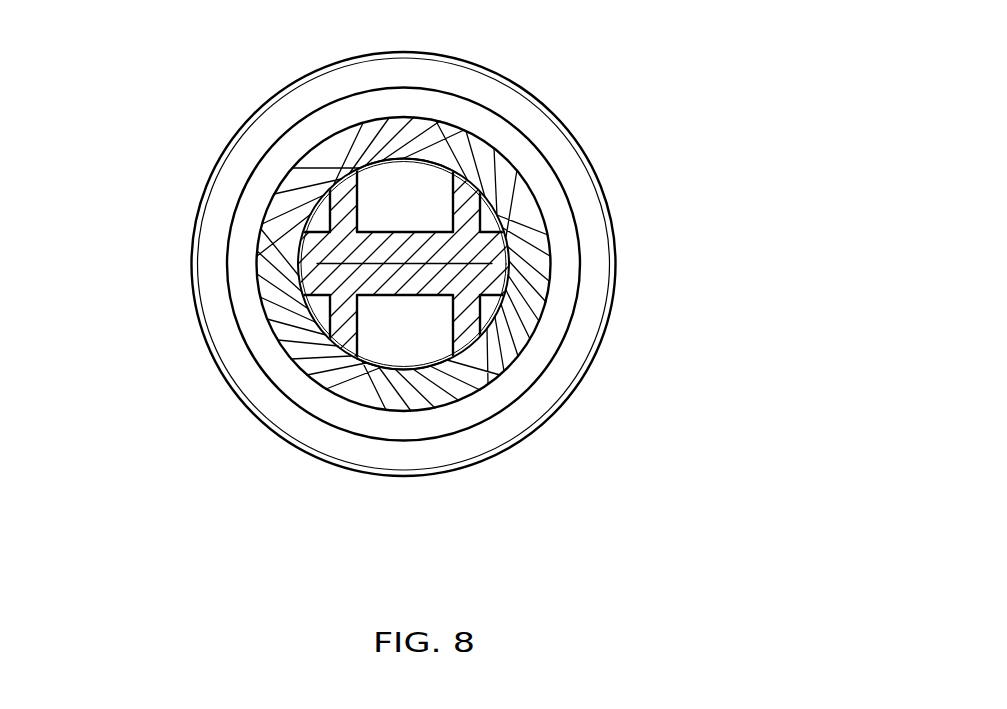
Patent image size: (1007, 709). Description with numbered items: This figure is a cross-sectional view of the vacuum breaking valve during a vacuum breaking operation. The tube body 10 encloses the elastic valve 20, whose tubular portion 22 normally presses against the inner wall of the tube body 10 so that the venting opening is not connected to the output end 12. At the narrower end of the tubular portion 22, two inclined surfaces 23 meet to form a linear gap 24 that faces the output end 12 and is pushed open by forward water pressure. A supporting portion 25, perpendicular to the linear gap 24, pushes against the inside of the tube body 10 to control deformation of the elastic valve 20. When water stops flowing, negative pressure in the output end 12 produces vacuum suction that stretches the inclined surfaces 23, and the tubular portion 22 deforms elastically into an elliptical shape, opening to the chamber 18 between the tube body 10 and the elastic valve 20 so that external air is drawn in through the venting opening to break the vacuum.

The tube body 10 is at (612, 389).
The output end 12 is at (533, 258).
The chamber 18 is at (485, 150).
The elastic valve 20 is at (376, 184).
The tubular portion 22 is at (392, 316).
The inclined surfaces 23 is at (423, 297).
The linear gap 24 is at (257, 268).
The supporting portion 25 is at (326, 208).